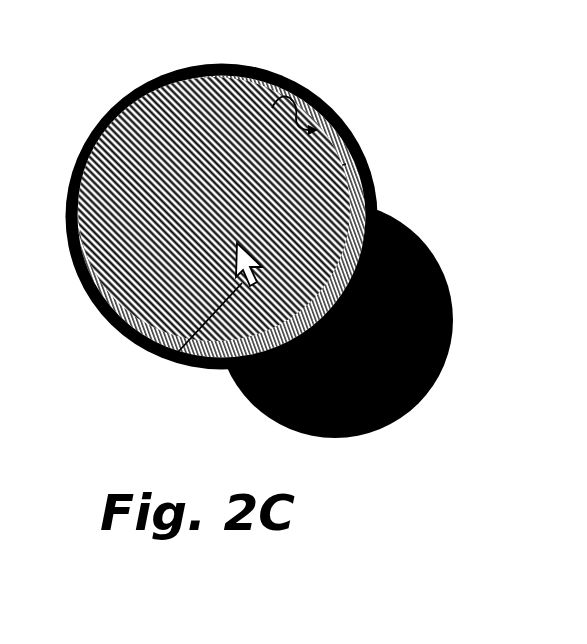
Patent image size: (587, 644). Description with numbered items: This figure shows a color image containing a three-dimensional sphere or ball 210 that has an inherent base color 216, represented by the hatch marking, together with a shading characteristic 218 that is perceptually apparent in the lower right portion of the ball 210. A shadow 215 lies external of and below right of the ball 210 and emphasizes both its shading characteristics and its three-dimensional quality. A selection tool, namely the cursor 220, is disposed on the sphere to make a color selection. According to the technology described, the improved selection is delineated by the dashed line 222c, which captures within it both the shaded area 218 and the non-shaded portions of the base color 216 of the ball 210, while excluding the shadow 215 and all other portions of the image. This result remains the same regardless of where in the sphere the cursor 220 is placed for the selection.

The sphere or ball 210 is at (370, 130).
The shadow 215 is at (428, 420).
The base color 216 is at (130, 107).
The shading characteristic 218 is at (368, 165).
The cursor 220 is at (178, 352).
The dashed line 222c is at (297, 83).